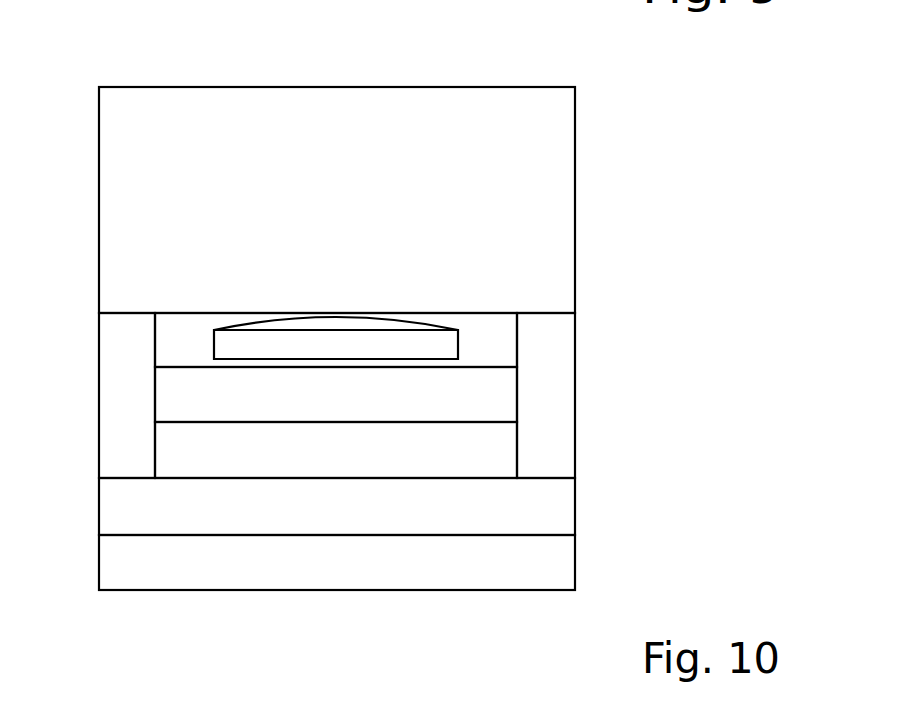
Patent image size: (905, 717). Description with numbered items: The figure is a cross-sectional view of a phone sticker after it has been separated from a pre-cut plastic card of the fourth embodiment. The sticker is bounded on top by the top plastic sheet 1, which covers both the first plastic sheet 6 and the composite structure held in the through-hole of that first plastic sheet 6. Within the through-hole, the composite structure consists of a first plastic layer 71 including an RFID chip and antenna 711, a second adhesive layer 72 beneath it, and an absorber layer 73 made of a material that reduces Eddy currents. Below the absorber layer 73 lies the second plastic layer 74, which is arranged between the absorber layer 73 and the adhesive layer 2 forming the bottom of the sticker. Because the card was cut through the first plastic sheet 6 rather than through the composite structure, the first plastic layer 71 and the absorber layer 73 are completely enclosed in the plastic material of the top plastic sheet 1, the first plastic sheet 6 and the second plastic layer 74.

The top plastic sheet 1 is at (473, 103).
The adhesive layer 2 is at (553, 557).
The first plastic sheet 6 is at (122, 388).
The first plastic layer 71 is at (492, 352).
The RFID chip and antenna 711 is at (343, 313).
The second adhesive layer 72 is at (477, 395).
The absorber layer 73 is at (492, 445).
The second plastic layer 74 is at (550, 502).